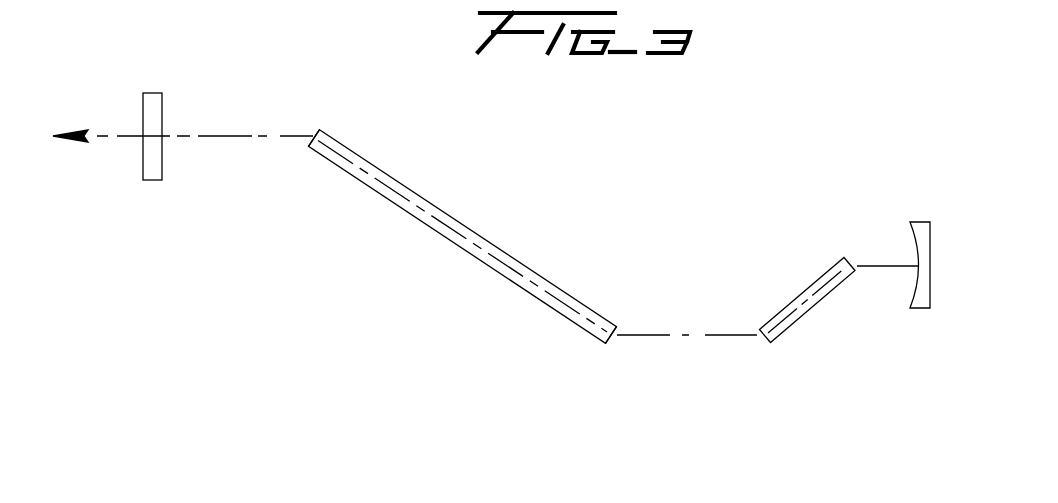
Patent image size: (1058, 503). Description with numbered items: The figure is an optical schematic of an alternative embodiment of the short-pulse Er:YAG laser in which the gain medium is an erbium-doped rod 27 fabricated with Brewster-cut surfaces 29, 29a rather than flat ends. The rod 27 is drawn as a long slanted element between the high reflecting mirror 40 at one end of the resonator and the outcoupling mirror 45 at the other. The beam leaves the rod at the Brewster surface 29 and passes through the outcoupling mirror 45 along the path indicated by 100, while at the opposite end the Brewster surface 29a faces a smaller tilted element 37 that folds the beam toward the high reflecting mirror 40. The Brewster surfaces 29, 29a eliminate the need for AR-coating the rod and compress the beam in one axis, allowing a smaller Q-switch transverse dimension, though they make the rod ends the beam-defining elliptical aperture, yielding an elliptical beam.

The light beam / optical path 100 is at (113, 140).
The outcoupling mirror 45 is at (157, 107).
The erbium-doped rod 27 is at (492, 271).
The Brewster-cut surface 29 is at (316, 137).
The Brewster-cut surface 29a is at (608, 338).
The folding mirror 37 is at (810, 313).
The high reflecting mirror 40 is at (923, 228).